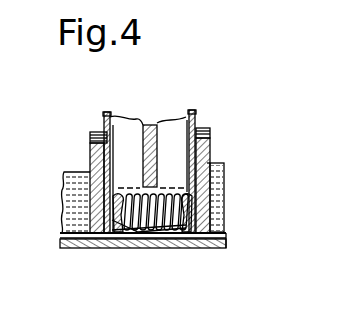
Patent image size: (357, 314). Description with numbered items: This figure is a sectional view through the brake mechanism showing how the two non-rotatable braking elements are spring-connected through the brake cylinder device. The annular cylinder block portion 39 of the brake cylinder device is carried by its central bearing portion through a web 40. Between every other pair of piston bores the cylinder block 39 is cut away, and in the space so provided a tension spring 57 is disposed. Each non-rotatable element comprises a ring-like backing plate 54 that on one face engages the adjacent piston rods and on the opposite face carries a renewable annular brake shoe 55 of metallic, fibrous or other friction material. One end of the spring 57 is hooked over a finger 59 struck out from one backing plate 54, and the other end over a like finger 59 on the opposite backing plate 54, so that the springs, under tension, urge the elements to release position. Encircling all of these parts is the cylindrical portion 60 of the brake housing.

The annular cylinder block portion 39 is at (178, 173).
The web 40 is at (147, 122).
The backing plate 54 is at (107, 116).
The brake shoe 55 is at (92, 148).
The tension spring 57 is at (129, 243).
The finger 59 is at (116, 243).
The cylindrical portion 60 is at (222, 249).